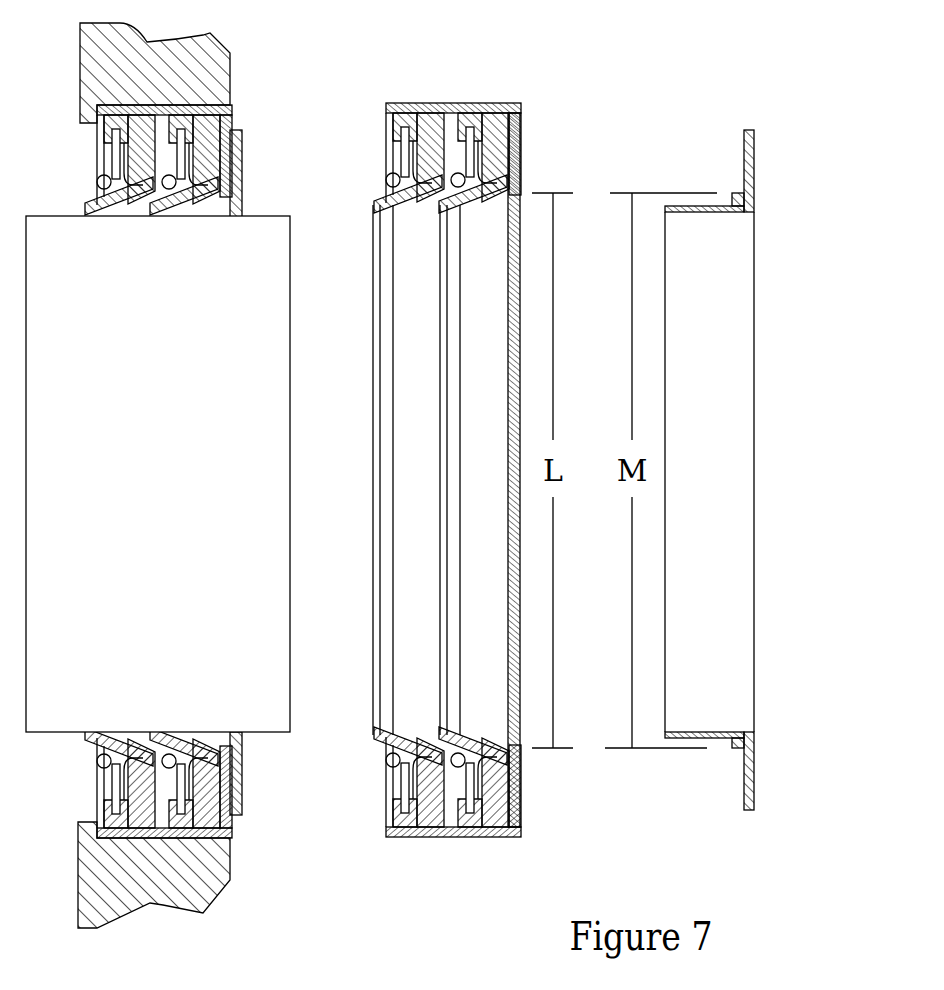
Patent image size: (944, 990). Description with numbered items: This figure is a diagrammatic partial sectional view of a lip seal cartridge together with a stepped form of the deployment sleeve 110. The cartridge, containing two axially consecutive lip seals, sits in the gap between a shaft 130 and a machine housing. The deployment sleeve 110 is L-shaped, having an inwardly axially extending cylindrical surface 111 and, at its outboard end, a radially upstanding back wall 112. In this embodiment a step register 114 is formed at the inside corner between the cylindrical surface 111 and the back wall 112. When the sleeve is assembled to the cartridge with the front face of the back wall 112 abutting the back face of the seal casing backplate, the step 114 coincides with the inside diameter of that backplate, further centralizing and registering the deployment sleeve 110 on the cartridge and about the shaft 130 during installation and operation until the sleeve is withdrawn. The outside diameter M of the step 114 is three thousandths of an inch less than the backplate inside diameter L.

The deployment sleeve 110 is at (767, 424).
The cylindrical surface 111 is at (690, 212).
The back wall 112 is at (757, 170).
The step register 114 is at (733, 193).
The shaft 130 is at (130, 489).